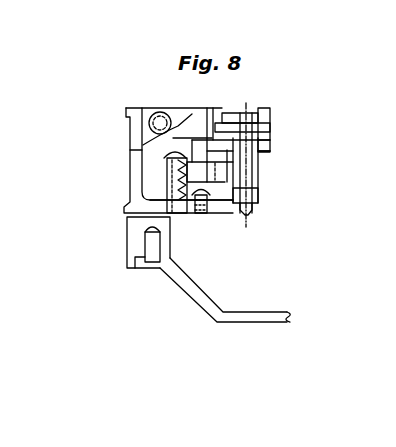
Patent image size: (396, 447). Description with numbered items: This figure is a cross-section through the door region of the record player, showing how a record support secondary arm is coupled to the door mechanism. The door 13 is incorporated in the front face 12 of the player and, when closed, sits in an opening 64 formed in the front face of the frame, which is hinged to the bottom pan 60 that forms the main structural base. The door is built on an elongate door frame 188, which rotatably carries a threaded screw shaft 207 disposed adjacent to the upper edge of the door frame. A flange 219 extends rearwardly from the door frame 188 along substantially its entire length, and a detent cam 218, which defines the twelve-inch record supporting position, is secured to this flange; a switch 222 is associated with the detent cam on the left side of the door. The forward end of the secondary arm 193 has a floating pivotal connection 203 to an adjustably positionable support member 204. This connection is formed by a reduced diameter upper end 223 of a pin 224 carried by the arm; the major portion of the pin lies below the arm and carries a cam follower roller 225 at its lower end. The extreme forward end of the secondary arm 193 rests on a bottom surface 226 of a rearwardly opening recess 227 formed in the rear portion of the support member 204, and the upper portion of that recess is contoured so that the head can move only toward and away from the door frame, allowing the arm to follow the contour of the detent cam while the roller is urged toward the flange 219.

The front face 12 is at (127, 237).
The door 13 is at (127, 118).
The bottom pan 60 is at (206, 284).
The opening 64 is at (130, 205).
The door frame 188 is at (143, 145).
The secondary arm 193 is at (272, 140).
The floating pivotal connection 203 is at (245, 103).
The support member 204 is at (130, 150).
The screw shaft 207 is at (157, 110).
The detent cam 218 is at (222, 205).
The flange 219 is at (163, 174).
The switch 222 is at (198, 172).
The reduced diameter upper end 223 is at (270, 121).
The pin 224 is at (258, 162).
The cam follower roller 225 is at (258, 200).
The bottom surface 226 is at (272, 143).
The recess 227 is at (232, 118).